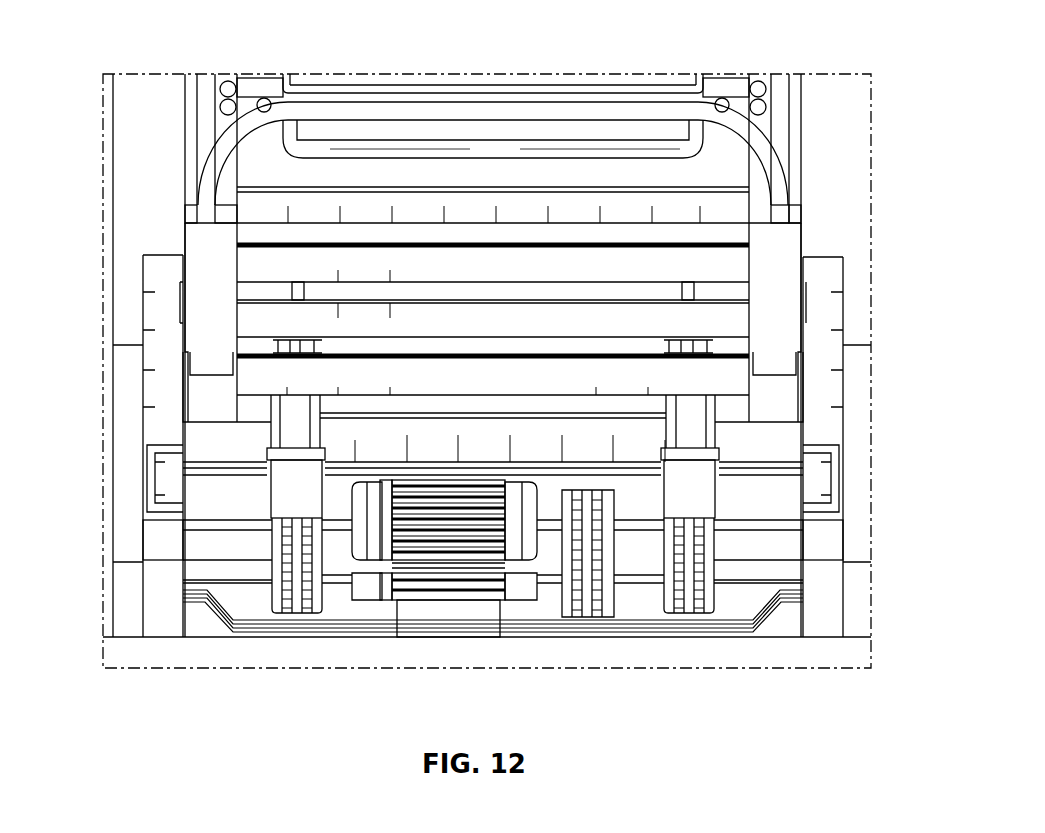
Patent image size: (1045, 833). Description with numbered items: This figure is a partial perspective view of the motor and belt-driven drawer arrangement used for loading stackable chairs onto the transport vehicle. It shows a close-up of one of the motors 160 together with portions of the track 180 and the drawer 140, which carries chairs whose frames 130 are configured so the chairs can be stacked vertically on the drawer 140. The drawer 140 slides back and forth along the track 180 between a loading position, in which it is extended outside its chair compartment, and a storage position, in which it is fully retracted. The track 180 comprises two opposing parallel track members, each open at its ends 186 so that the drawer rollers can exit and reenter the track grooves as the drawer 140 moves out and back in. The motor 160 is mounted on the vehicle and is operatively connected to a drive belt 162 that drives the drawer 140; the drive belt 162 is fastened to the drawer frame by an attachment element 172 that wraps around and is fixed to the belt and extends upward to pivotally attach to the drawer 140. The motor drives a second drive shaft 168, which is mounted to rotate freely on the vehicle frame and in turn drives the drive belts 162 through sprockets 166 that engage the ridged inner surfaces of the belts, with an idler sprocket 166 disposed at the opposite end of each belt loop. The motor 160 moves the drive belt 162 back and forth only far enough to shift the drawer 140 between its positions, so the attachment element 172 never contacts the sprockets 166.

The frame 130 is at (257, 118).
The drawer 140 is at (203, 250).
The track 180 is at (162, 347).
The attachment element 172 is at (285, 402).
The open end 186 is at (158, 489).
The drive belt 162 is at (285, 493).
The sprocket 166 is at (285, 605).
The motor 160 is at (373, 605).
The second drive shaft 168 is at (240, 568).